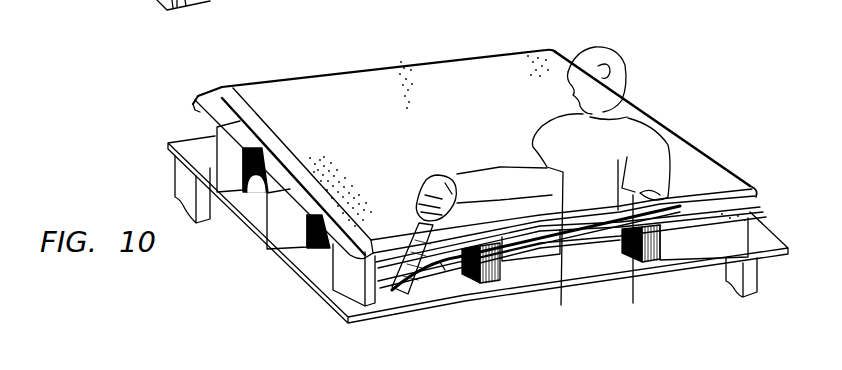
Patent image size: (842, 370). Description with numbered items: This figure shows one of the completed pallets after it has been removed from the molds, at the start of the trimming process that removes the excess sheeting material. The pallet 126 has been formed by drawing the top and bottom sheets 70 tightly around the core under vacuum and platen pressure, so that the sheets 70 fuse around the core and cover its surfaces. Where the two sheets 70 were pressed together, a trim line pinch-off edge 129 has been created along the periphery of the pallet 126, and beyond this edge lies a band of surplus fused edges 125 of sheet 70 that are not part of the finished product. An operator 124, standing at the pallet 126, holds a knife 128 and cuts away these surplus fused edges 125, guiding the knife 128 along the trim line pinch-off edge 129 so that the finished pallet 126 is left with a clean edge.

The sheet 70 is at (455, 264).
The operator 124 is at (634, 126).
The surplus fused edges 125 is at (445, 263).
The pallet 126 is at (428, 62).
The knife 128 is at (448, 168).
The trim line pinch-off edge 129 is at (276, 172).